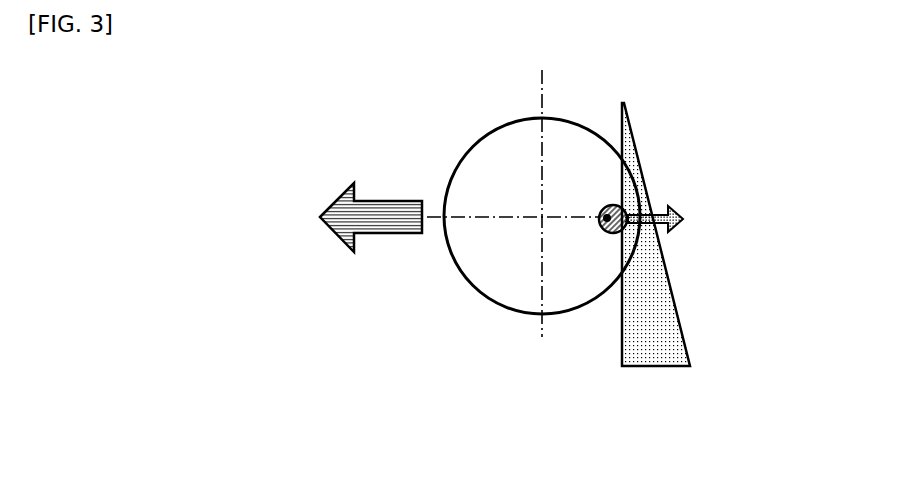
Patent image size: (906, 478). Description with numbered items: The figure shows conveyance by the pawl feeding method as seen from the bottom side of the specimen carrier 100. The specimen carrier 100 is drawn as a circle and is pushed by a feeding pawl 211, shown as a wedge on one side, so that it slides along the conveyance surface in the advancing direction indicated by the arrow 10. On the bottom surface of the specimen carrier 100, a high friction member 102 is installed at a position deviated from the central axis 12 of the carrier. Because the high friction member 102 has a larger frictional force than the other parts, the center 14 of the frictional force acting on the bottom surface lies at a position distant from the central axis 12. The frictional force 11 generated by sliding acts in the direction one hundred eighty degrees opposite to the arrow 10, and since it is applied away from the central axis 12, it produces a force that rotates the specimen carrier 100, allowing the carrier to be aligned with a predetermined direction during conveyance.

The arrow 10 is at (332, 230).
The frictional force 11 is at (678, 223).
The central axis 12 is at (542, 220).
The center of the frictional force 14 is at (608, 232).
The specimen carrier 100 is at (475, 143).
The high friction member 102 is at (620, 202).
The feeding pawl 211 is at (628, 120).